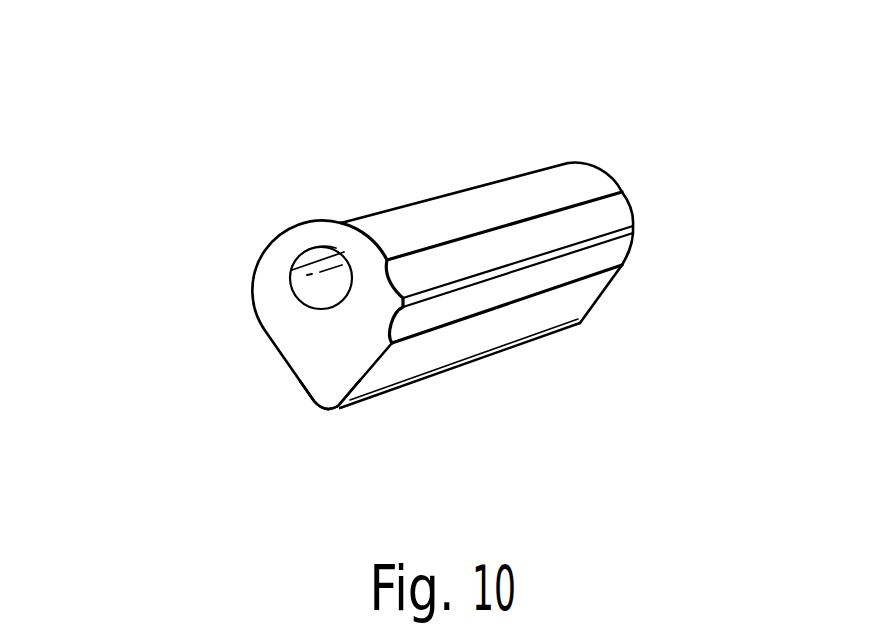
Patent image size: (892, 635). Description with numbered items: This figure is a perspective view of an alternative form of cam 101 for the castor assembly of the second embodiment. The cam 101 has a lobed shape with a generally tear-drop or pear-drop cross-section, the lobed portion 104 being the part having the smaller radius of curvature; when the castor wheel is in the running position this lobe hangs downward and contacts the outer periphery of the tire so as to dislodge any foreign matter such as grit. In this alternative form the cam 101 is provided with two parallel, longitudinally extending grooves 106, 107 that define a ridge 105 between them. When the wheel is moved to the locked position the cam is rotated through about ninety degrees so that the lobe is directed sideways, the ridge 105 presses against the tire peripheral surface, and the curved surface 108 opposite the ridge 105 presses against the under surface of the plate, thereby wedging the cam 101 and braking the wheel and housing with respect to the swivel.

The cam 101 is at (420, 133).
The lobed portion 104 is at (323, 391).
The ridge 105 is at (437, 287).
The groove 106 is at (582, 215).
The groove 107 is at (570, 272).
The curved surface 108 is at (218, 303).